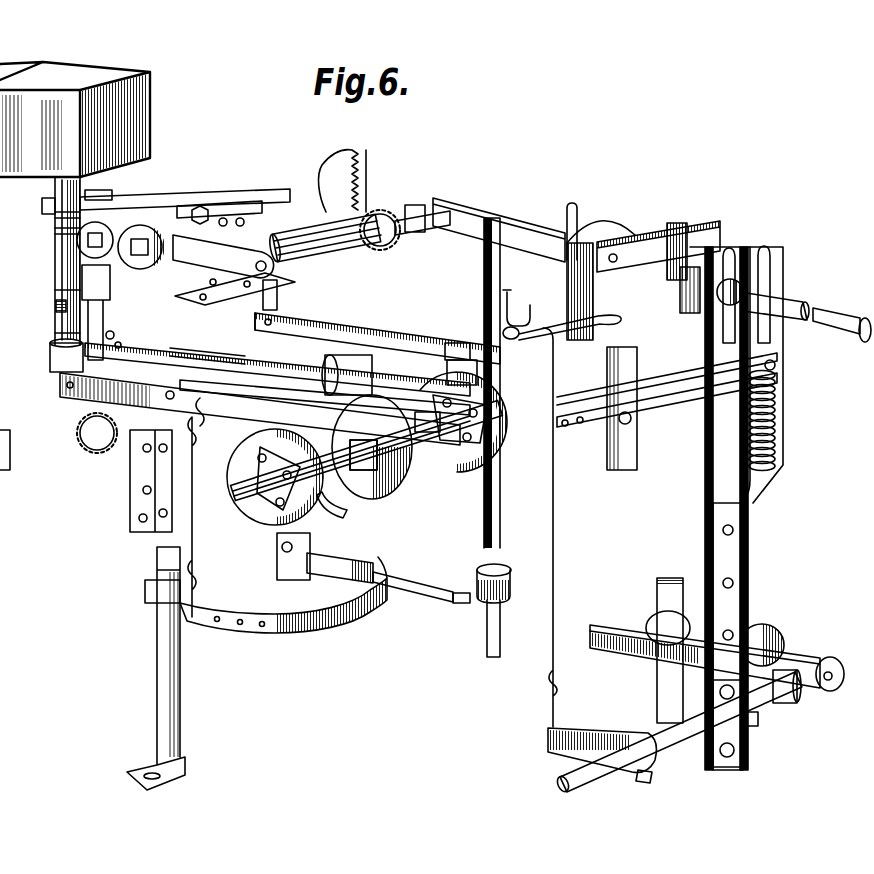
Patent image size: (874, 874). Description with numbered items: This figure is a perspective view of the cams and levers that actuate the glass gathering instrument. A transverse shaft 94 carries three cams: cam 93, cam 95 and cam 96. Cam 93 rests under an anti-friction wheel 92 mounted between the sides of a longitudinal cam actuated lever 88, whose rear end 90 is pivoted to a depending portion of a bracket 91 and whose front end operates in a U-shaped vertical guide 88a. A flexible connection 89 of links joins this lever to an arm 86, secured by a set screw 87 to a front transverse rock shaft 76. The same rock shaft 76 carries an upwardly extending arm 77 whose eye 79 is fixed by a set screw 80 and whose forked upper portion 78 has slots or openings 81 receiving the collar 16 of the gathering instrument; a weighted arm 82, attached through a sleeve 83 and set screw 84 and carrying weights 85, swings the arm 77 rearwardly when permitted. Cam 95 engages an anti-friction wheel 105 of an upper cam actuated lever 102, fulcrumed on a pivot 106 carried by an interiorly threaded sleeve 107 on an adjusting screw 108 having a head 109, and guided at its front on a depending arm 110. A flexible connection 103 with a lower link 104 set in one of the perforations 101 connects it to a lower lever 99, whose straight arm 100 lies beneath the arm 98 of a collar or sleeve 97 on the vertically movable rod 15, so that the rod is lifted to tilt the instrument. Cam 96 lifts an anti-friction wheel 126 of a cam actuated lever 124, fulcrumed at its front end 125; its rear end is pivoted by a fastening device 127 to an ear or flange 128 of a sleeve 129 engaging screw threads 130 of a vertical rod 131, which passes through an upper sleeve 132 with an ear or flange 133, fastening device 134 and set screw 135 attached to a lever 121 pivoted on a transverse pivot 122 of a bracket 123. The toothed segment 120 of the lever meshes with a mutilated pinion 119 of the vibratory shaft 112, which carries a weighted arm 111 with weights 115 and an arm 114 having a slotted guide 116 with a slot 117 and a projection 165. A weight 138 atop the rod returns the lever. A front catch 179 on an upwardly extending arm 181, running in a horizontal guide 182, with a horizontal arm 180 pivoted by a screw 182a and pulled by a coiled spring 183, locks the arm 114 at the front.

The weight 138 is at (123, 78).
The vertical rod 131 is at (60, 266).
The ear or flange 133 is at (102, 196).
The set screw 135 is at (42, 206).
The fastening device 134 is at (55, 216).
The upper sleeve 132 is at (55, 233).
The screw threads 130 is at (58, 291).
The ear or flange 128 is at (57, 306).
The fastening device 127 is at (57, 336).
The sleeve 129 is at (52, 358).
The pivot 106 is at (70, 389).
The cam actuated lever 124 is at (240, 352).
The anti-friction wheel 105 is at (283, 395).
The cam actuated lever 88 is at (350, 326).
The rear end of lever 90 is at (262, 322).
The bracket 91 is at (278, 303).
The bracket 123 is at (200, 298).
The adjusting screw 108 is at (110, 331).
The interiorly threaded sleeve 107 is at (121, 344).
The lever 121 is at (167, 198).
The transverse pivot 122 is at (195, 210).
The weighted arm 111 is at (222, 265).
The vibratory shaft 112 is at (341, 258).
The mutilated pinion 119 is at (382, 210).
The toothed segment 120 is at (362, 176).
The arm 114 is at (518, 212).
The projection 165 is at (584, 208).
The front catch 179 is at (618, 231).
The slotted guide 116 is at (708, 230).
The weights 115 is at (137, 238).
The slot 117 is at (690, 300).
The collar 16 is at (722, 308).
The slots or openings 81 is at (734, 258).
The forked upper portion 78 is at (784, 436).
The coiled spring 183 is at (780, 400).
The upwardly extending arm 181 is at (632, 384).
The horizontal arm 180 is at (670, 404).
The horizontal guide 182 is at (600, 314).
The vertical guide 88a is at (532, 310).
The screw 182a is at (630, 424).
The anti-friction wheel 92 is at (457, 343).
The front end of lever 125 is at (460, 360).
The anti-friction wheel 126 is at (333, 360).
The vertically movable rod 15 is at (484, 266).
The collar or sleeve 97 is at (510, 592).
The arm 98 is at (462, 606).
The straight arm 100 is at (427, 594).
The lower lever 99 is at (315, 637).
The perforations 101 is at (262, 628).
The lower link 104 is at (198, 592).
The flexible connection 103 is at (194, 544).
The cam actuated lever 102 is at (215, 415).
The head 109 is at (97, 454).
The transverse shaft 94 is at (237, 489).
The cam 95 is at (322, 517).
The cam 96 is at (380, 494).
The cam 93 is at (464, 460).
The depending arm 110 is at (377, 455).
The flexible connection 89 is at (555, 584).
The arm 86 is at (560, 755).
The rock shaft 76 is at (586, 787).
The set screw 87 is at (646, 784).
The eye 79 is at (742, 745).
The set screw 80 is at (758, 726).
The sleeve 83 is at (803, 698).
The weighted arm 82 is at (803, 662).
The set screw 84 is at (845, 678).
The weights 85 is at (678, 605).
The upwardly extending arm 77 is at (745, 566).